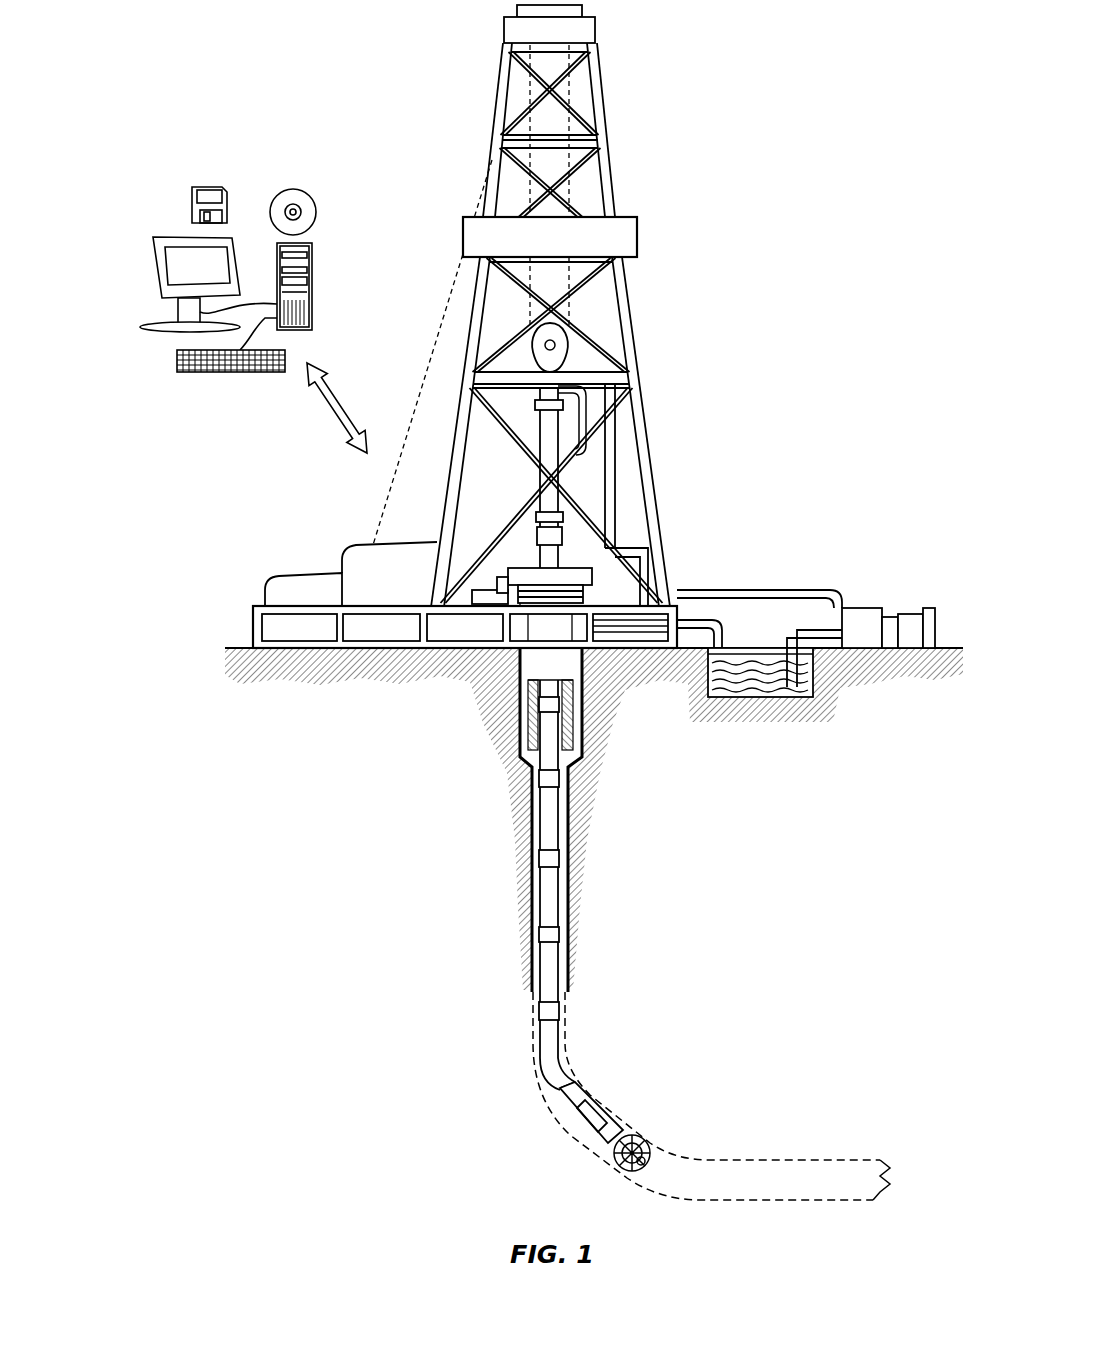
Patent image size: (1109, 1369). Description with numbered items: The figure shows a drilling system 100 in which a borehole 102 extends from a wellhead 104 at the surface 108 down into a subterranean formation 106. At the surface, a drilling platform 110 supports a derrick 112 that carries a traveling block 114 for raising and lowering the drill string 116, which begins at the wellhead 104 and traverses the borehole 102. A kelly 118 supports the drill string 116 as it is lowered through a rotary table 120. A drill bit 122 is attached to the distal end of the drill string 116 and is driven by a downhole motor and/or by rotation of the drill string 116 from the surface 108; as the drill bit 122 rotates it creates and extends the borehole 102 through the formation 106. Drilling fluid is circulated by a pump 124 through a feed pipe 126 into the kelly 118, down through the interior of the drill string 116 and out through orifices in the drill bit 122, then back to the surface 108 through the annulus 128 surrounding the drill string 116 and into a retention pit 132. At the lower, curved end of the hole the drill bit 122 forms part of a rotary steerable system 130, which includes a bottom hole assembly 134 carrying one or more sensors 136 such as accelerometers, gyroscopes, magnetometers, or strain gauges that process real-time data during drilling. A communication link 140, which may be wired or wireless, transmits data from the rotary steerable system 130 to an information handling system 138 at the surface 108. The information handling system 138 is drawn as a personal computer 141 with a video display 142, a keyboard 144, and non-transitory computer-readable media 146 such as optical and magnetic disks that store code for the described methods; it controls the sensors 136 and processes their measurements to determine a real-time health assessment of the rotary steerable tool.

The drilling system 100 is at (868, 110).
The borehole 102 is at (568, 852).
The wellhead 104 is at (600, 592).
The subterranean formation 106 is at (797, 944).
The surface 108 is at (945, 648).
The drilling platform 110 is at (253, 627).
The derrick 112 is at (610, 157).
The traveling block 114 is at (580, 348).
The drill string 116 is at (560, 836).
The kelly 118 is at (550, 432).
The rotary table 120 is at (586, 566).
The drill bit 122 is at (651, 1141).
The pump 124 is at (868, 610).
The feed pipe 126 is at (785, 590).
The annulus 128 is at (532, 853).
The rotary steerable system 130 is at (559, 1113).
The retention pit 132 is at (755, 690).
The bottom hole assembly 134 is at (594, 1086).
The sensors 136 is at (607, 1116).
The information handling system 138 is at (230, 286).
The communication link 140 is at (327, 413).
The personal computer 141 is at (312, 257).
The video display 142 is at (158, 276).
The keyboard 144 is at (188, 373).
The non-transitory computer-readable media 146 is at (290, 189).